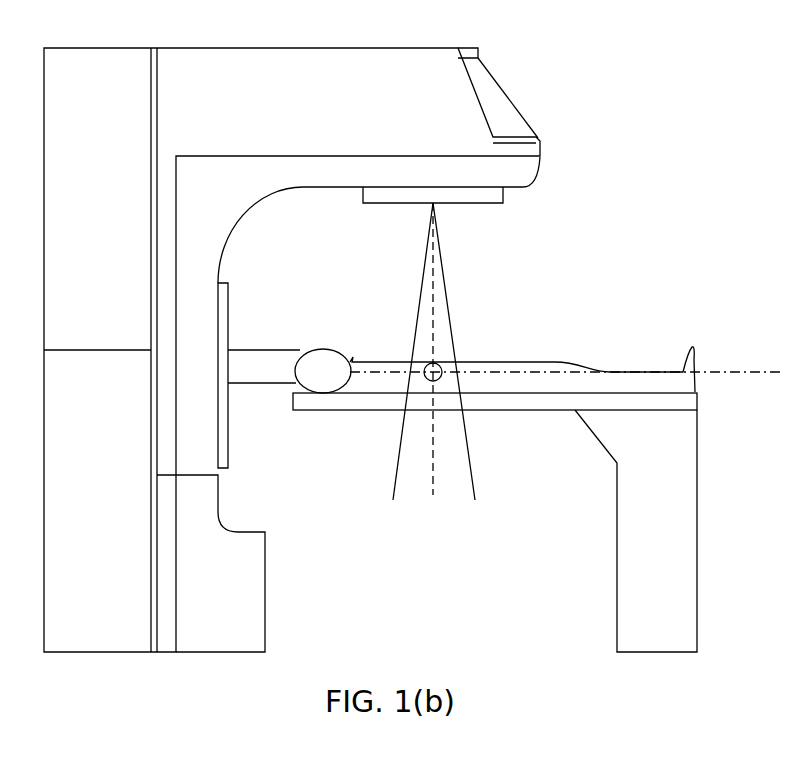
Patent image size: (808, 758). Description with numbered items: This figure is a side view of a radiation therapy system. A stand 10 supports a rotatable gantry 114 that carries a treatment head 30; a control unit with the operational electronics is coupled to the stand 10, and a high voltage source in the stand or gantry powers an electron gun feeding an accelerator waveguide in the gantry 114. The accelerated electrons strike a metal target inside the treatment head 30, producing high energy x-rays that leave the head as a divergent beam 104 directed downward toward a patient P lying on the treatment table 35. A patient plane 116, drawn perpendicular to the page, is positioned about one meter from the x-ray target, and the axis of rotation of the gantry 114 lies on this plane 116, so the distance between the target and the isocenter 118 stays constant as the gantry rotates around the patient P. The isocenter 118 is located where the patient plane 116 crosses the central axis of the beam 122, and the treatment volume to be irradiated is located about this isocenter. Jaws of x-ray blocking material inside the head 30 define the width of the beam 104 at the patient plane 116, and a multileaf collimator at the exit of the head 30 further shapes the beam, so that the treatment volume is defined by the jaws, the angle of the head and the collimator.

The stand 10 is at (88, 60).
The gantry 114 is at (262, 188).
The treatment head 30 is at (528, 166).
The divergent beam 104 is at (425, 257).
The central axis of beam 122 is at (433, 495).
The isocenter 118 is at (427, 378).
The treatment table 35 is at (530, 410).
The patient plane 116 is at (737, 375).
The patient P is at (612, 373).